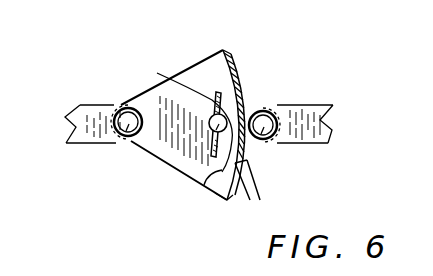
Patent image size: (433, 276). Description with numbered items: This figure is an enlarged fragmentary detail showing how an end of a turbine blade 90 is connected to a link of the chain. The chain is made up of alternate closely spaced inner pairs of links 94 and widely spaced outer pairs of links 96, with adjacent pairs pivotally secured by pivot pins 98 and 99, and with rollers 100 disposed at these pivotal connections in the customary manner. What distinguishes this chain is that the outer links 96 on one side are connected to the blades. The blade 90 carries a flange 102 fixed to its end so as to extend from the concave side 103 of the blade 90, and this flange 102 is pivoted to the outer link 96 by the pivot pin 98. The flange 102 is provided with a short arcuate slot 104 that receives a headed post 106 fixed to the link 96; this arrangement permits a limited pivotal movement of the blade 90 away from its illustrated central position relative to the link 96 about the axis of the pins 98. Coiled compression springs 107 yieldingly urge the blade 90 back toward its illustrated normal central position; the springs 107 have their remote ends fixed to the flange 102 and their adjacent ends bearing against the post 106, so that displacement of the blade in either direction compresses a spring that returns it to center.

The turbine blade 90 is at (247, 73).
The inner links 94 is at (80, 110).
The outer links 96 is at (263, 106).
The pivot pin 98 is at (137, 142).
The pivot pin 99 is at (258, 146).
The rollers 100 is at (126, 106).
The flange 102 is at (199, 80).
The concave side 103 is at (219, 177).
The arcuate slot 104 is at (207, 102).
The headed post 106 is at (212, 124).
The coiled compression springs 107 is at (244, 186).